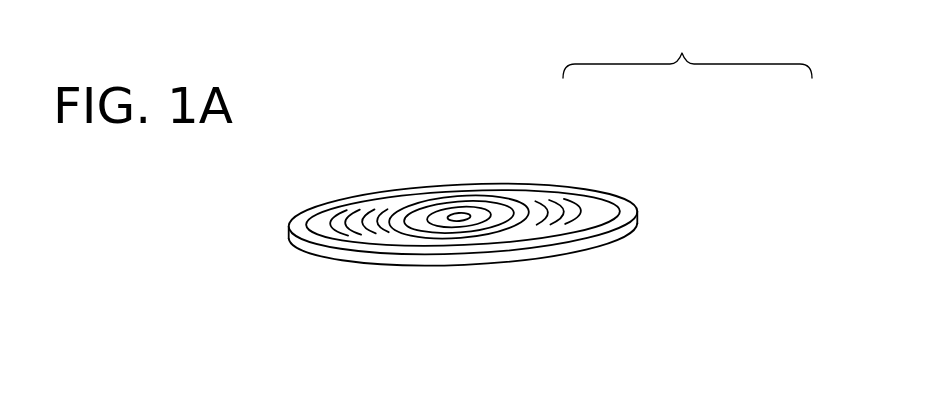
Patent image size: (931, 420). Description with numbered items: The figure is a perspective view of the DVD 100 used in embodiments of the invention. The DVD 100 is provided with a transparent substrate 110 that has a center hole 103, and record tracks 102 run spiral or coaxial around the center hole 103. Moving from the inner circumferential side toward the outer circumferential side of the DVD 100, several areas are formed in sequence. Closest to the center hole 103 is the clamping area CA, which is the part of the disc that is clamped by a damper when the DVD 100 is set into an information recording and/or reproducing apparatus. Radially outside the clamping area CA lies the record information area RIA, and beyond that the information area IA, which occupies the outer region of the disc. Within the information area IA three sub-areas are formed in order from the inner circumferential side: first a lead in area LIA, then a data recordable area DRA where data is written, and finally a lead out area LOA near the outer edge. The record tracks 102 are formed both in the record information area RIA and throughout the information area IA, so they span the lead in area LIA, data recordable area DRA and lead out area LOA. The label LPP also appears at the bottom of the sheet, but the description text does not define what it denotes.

The DVD 100 is at (564, 197).
The record tracks 102 is at (381, 213).
The center hole 103 is at (455, 212).
The transparent substrate 110 is at (488, 254).
The clamping area CA is at (471, 212).
The record information area RIA is at (473, 131).
The lead in area LIA is at (498, 164).
The data recordable area DRA is at (614, 152).
The lead out area LOA is at (548, 165).
The information area IA is at (687, 48).
The land pre-pit LPP is at (457, 412).